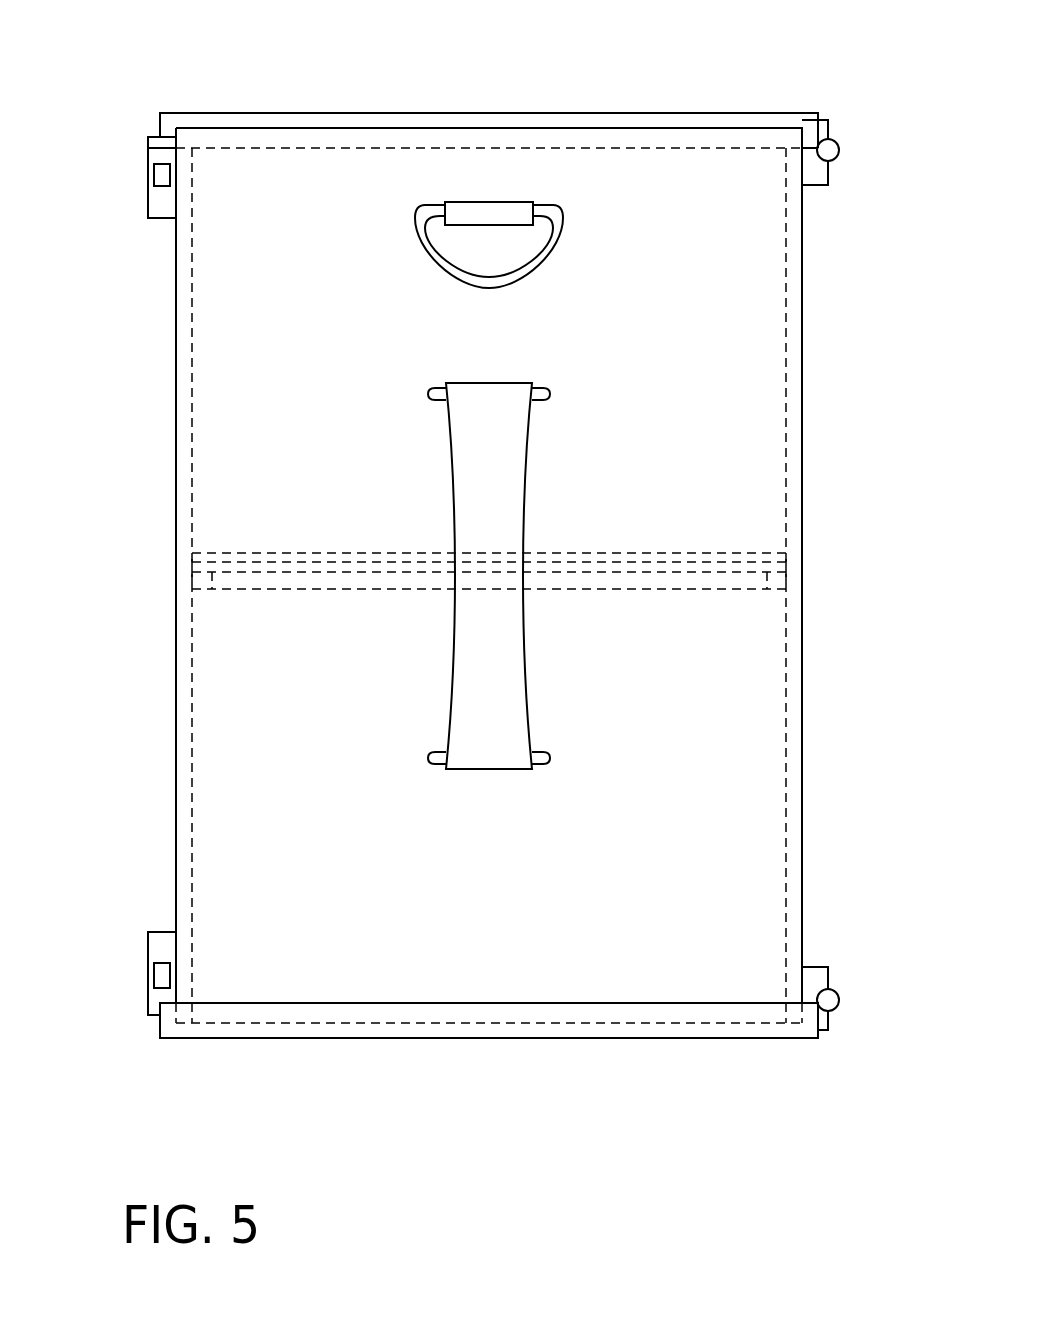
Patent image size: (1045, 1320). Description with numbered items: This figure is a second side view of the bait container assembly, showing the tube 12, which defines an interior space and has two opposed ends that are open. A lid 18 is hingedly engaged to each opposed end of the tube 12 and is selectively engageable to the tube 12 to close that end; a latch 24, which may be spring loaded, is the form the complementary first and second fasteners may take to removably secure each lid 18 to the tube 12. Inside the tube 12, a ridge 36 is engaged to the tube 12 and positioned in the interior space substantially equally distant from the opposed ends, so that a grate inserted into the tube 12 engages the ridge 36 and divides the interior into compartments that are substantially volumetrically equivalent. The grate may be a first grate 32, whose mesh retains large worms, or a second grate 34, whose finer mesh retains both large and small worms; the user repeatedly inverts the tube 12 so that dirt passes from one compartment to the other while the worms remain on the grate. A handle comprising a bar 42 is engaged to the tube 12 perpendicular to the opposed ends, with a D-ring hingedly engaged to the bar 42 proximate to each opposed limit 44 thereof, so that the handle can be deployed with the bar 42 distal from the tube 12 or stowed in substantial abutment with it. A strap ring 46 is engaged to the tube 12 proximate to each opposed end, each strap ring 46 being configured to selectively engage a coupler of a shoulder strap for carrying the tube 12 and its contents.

The tube 12 is at (803, 368).
The lid 18 is at (457, 115).
The latch 24 is at (147, 208).
The first grate 32 is at (775, 548).
The second grate 34 is at (776, 573).
The ridge 36 is at (200, 583).
The bar 42 is at (462, 460).
The opposed limit 44 is at (490, 385).
The strap ring 46 is at (545, 200).